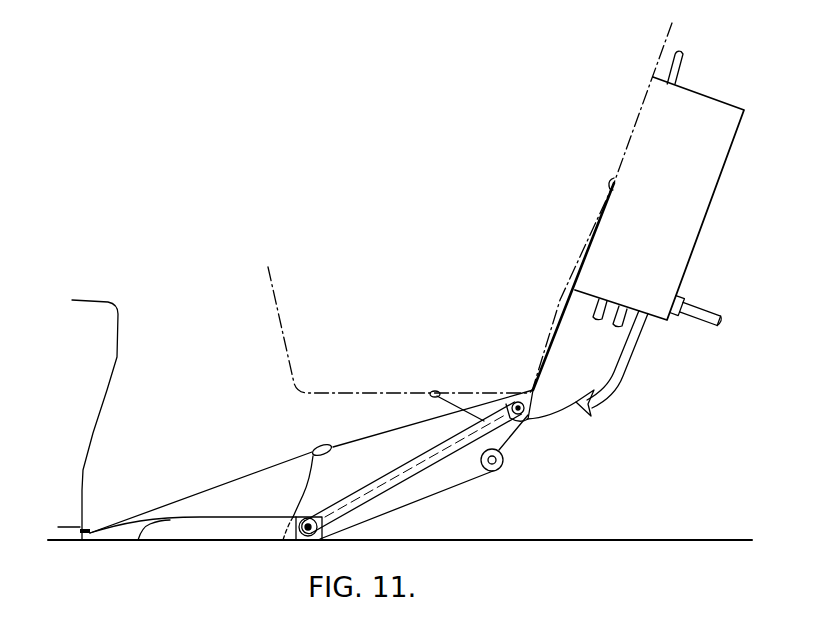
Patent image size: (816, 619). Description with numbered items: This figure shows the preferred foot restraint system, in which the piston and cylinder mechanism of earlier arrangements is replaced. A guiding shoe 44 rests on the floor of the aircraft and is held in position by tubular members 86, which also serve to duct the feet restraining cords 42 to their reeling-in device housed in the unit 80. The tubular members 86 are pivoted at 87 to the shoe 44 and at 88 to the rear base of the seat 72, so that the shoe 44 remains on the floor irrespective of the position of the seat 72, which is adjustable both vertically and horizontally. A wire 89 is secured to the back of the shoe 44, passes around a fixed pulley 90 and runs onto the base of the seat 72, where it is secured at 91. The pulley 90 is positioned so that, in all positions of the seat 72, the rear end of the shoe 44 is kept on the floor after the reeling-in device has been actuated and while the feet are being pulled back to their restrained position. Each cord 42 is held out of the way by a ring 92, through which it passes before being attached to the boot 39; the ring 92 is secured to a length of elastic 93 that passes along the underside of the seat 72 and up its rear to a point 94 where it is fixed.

The boot 39 is at (107, 386).
The guiding shoe 44 is at (253, 521).
The ring 92 is at (316, 448).
The length of elastic 93 is at (390, 430).
The securing point of wire 91 is at (434, 392).
The tubular members 86 is at (421, 469).
The pivot to shoe 87 is at (300, 538).
The pivot to seat base 88 is at (523, 416).
The wire 89 is at (393, 506).
The fixed pulley 90 is at (499, 465).
The feet restraining cords 42 is at (550, 416).
The unit 80 is at (695, 217).
The seat 72 is at (670, 38).
The fixing point of elastic 94 is at (609, 183).